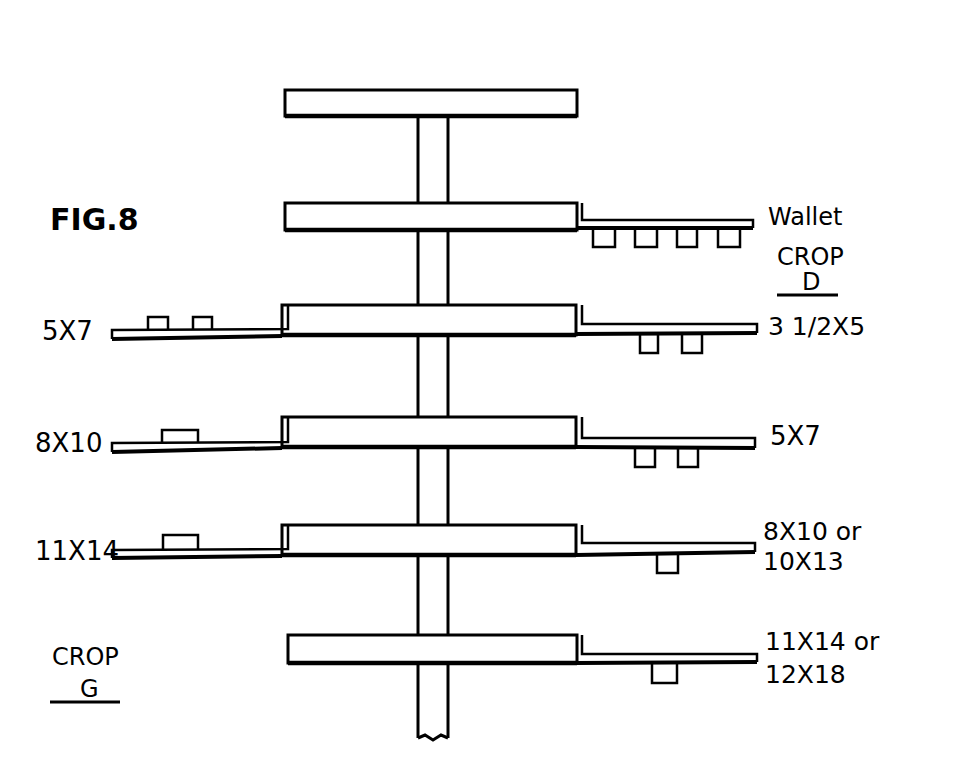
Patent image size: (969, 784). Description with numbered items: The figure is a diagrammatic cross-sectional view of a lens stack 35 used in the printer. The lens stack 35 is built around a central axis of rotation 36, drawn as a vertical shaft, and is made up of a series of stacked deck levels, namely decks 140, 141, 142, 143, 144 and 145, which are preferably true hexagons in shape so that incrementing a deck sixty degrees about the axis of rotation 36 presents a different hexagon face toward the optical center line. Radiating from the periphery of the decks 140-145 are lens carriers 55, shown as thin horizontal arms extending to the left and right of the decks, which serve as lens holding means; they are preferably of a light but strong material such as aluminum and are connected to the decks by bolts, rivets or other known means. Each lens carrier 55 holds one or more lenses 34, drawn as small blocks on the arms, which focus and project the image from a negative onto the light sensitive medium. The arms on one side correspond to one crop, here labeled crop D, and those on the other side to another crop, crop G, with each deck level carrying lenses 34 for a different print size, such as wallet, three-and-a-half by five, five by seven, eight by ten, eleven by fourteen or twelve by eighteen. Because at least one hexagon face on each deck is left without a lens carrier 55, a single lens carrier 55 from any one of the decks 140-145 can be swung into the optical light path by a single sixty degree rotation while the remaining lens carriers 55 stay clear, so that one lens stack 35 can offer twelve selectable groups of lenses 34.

The lens stack 35 is at (202, 142).
The axis of rotation 36 is at (427, 146).
The deck 140 is at (563, 90).
The deck 141 is at (542, 203).
The deck 142 is at (535, 313).
The deck 143 is at (535, 423).
The deck 144 is at (535, 533).
The deck 145 is at (533, 643).
The lens carrier 55 is at (744, 220).
The lens 34 is at (638, 247).